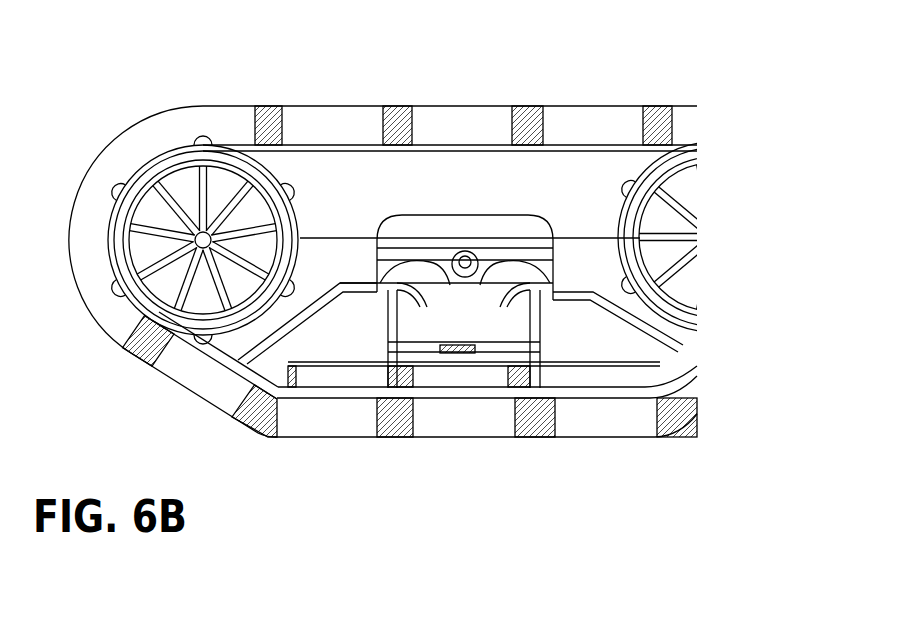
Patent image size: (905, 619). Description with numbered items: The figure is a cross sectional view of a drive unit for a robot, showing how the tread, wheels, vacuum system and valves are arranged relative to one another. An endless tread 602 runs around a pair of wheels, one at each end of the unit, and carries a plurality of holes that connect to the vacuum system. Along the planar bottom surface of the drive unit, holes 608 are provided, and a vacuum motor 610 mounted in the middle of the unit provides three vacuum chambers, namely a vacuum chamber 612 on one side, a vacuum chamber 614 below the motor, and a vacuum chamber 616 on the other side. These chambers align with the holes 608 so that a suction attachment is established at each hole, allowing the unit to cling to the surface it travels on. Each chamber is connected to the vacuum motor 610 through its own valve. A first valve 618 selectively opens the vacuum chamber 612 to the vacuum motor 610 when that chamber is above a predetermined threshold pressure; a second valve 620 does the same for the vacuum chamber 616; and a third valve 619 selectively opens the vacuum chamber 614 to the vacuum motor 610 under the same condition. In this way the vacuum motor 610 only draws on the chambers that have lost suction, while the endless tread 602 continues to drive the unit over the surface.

The endless tread 602 is at (394, 125).
The holes 608 is at (339, 432).
The vacuum motor 610 is at (506, 290).
The vacuum chamber 612 is at (337, 343).
The vacuum chamber 614 is at (460, 373).
The vacuum chamber 616 is at (602, 347).
The first valve 618 is at (385, 315).
The third valve 619 is at (460, 340).
The second valve 620 is at (545, 320).